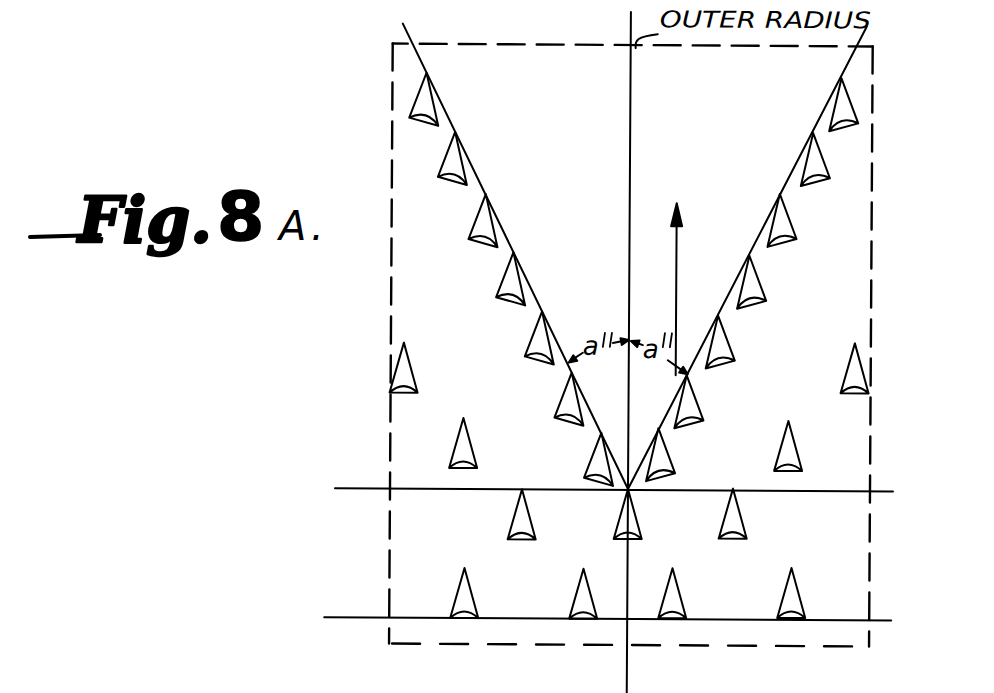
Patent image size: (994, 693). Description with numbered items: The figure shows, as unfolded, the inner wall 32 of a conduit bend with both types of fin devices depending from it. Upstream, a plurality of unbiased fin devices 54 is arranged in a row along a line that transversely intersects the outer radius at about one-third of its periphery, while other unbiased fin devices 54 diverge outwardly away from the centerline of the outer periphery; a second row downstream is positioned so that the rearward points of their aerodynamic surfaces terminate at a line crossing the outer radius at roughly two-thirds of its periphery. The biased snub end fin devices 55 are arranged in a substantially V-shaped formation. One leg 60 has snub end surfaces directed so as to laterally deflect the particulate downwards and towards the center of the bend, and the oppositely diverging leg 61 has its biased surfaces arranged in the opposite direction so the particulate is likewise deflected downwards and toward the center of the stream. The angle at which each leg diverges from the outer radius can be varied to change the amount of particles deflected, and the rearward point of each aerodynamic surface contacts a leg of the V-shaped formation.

The inner wall 32 is at (870, 590).
The unbiased fin devices 54 is at (404, 394).
The biased snub end fin devices 55 is at (434, 126).
The leg of the V-shaped formation 60 is at (810, 132).
The oppositely diverging leg 61 is at (458, 138).